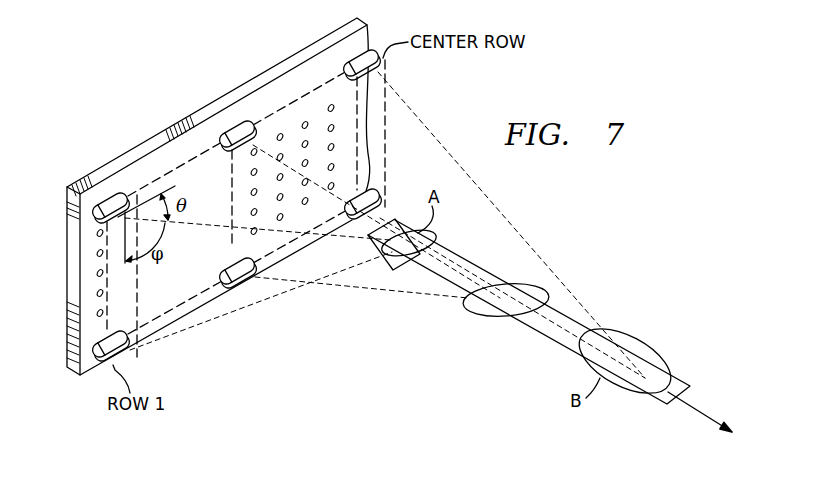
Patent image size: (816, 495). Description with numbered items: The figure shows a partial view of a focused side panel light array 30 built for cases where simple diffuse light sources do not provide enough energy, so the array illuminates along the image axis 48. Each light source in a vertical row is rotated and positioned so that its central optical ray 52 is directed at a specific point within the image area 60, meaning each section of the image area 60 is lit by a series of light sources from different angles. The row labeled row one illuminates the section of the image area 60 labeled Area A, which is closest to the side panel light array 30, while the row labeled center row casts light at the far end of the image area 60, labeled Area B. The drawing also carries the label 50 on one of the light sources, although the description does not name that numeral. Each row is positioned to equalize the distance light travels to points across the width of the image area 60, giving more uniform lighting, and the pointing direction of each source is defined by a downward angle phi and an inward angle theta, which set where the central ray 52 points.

The side panel light array 30 is at (104, 127).
The sensor 50 is at (233, 121).
The central optical ray 52 is at (228, 322).
The image area 60 is at (682, 388).
The image axis 48 is at (712, 413).